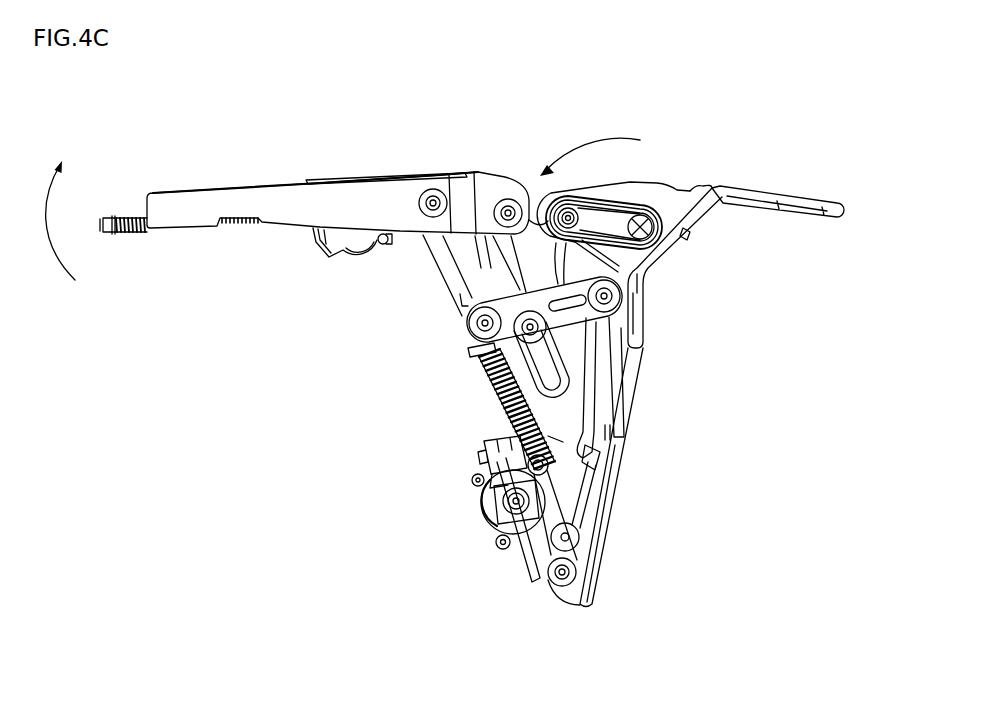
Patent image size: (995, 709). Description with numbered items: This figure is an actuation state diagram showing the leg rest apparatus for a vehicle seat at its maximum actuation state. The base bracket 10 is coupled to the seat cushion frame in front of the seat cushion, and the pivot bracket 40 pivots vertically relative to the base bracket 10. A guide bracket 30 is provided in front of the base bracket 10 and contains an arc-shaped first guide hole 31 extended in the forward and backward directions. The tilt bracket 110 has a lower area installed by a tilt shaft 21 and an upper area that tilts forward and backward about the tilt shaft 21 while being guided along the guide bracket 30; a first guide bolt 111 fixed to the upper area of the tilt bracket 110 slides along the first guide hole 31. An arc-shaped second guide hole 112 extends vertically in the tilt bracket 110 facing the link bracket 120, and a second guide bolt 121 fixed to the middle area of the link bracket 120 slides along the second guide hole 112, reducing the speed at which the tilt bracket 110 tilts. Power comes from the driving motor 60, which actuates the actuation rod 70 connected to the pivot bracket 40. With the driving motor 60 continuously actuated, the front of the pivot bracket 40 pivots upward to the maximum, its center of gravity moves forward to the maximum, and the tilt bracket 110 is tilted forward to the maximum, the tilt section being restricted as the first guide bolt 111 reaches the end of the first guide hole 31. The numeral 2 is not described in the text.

The base plate 2 is at (594, 498).
The base bracket 10 is at (808, 208).
The tilt shaft 21 is at (573, 570).
The guide bracket 30 is at (635, 202).
The first guide hole 31 is at (640, 240).
The pivot bracket 40 is at (263, 197).
The driving motor 60 is at (483, 503).
The actuation rod 70 is at (491, 378).
The tilt bracket 110 is at (614, 440).
The first guide bolt 111 is at (639, 243).
The second guide hole 112 is at (578, 388).
The link bracket 120 is at (612, 319).
The second guide bolt 121 is at (567, 353).